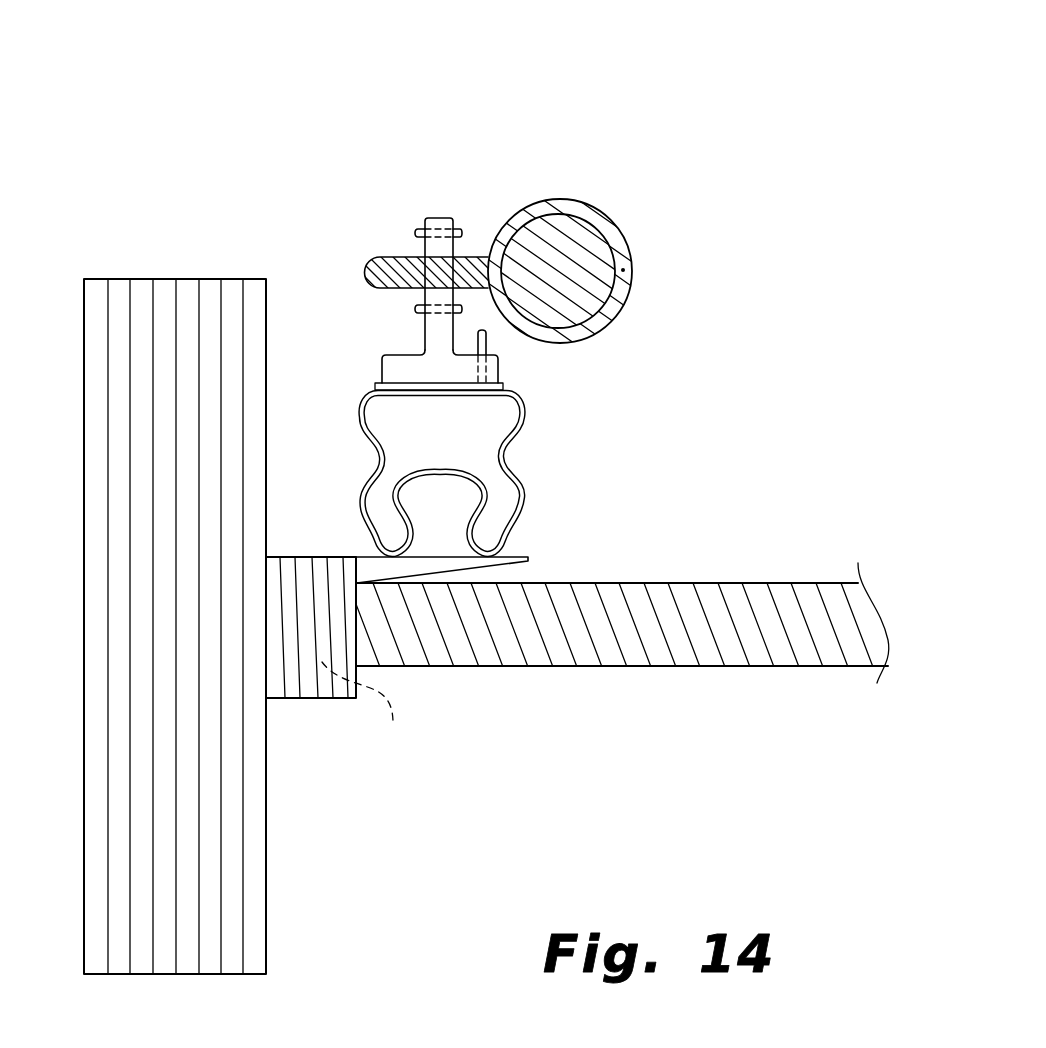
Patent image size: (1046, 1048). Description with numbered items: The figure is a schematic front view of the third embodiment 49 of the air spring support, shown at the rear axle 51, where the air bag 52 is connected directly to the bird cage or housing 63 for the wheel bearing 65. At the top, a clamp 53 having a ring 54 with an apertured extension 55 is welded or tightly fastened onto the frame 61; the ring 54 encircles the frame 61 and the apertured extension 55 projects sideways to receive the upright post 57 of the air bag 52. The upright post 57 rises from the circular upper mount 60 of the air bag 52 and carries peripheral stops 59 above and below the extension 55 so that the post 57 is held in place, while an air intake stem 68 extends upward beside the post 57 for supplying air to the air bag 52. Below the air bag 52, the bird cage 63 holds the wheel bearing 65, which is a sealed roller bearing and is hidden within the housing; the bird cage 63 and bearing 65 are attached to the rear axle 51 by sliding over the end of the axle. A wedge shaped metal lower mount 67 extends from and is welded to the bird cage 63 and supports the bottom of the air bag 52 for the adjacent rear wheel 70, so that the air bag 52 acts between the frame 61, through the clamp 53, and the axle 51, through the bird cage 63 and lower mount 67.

The third embodiment 49 is at (428, 118).
The rear axle 51 is at (780, 667).
The air bag 52 is at (467, 438).
The clamp 53 is at (583, 157).
The ring 54 is at (610, 232).
The apertured extension 55 is at (375, 257).
The upright post 57 is at (435, 332).
The peripheral stops 59 is at (417, 232).
The circular upper mount 60 is at (373, 388).
The frame 61 is at (593, 292).
The bird cage 63 is at (298, 556).
The wheel bearing 65 is at (366, 710).
The wedge shaped metal lower mount 67 is at (527, 553).
The air intake stem 68 is at (488, 338).
The rear wheel 70 is at (142, 278).